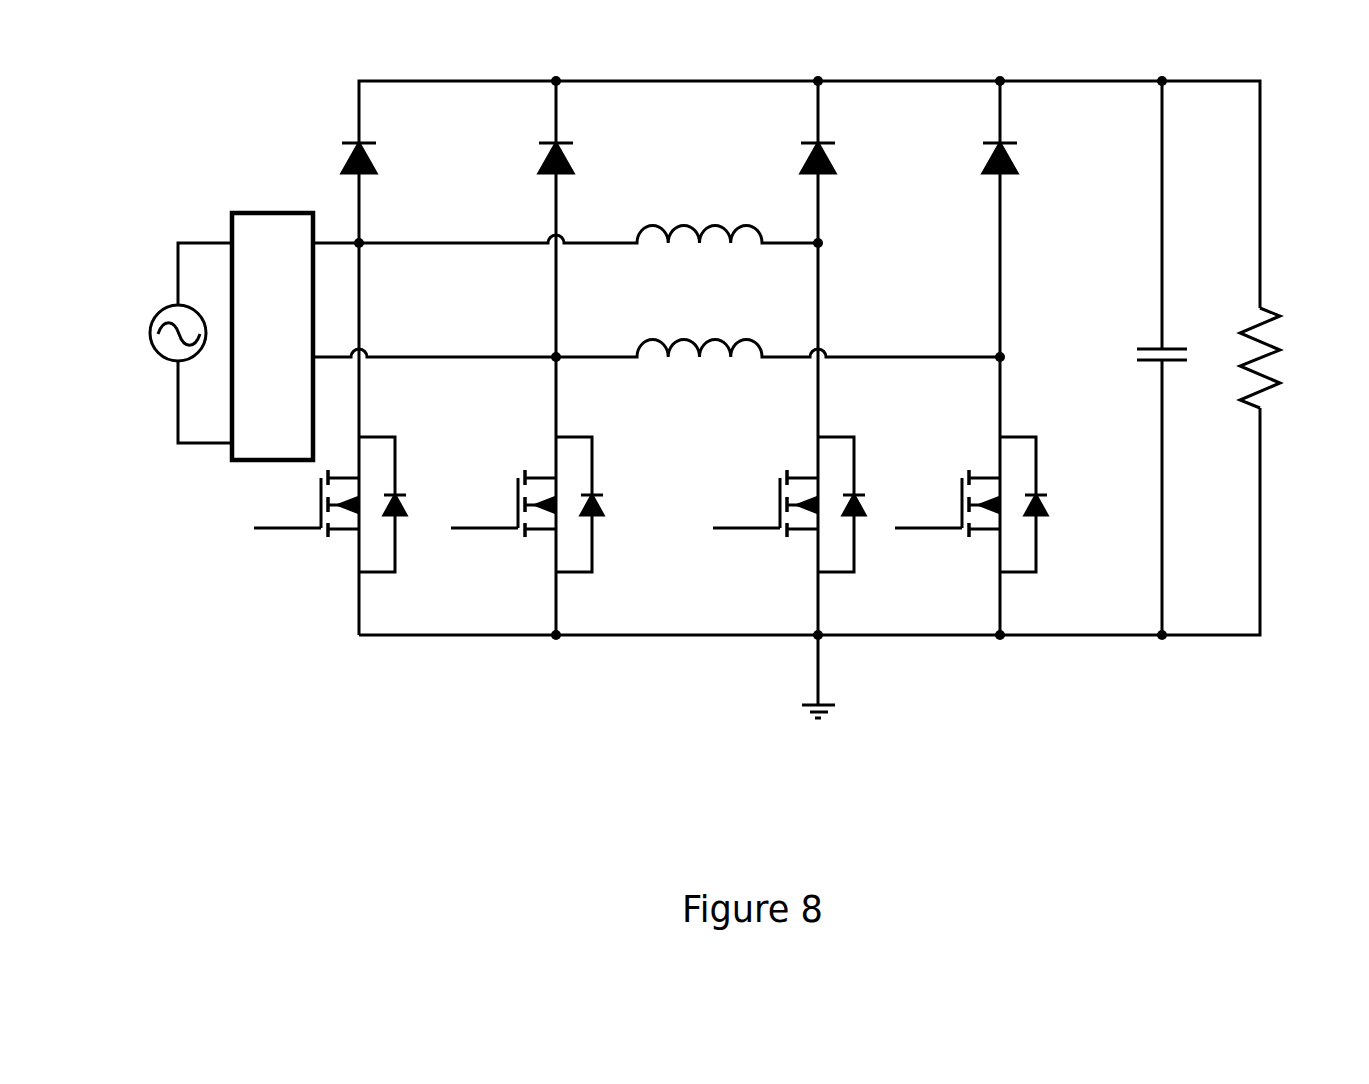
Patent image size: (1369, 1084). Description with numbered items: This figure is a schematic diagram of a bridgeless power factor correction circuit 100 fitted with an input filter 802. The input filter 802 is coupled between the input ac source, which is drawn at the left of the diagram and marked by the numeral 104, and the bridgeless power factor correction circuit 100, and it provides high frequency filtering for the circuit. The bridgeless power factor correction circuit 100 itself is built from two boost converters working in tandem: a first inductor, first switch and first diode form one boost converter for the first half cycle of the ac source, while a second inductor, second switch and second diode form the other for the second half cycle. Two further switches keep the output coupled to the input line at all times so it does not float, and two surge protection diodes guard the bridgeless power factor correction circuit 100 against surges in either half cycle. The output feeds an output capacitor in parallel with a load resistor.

The bridgeless power factor correction circuit 100 is at (700, 469).
The AC input source 104 is at (150, 362).
The input filter 802 is at (292, 303).